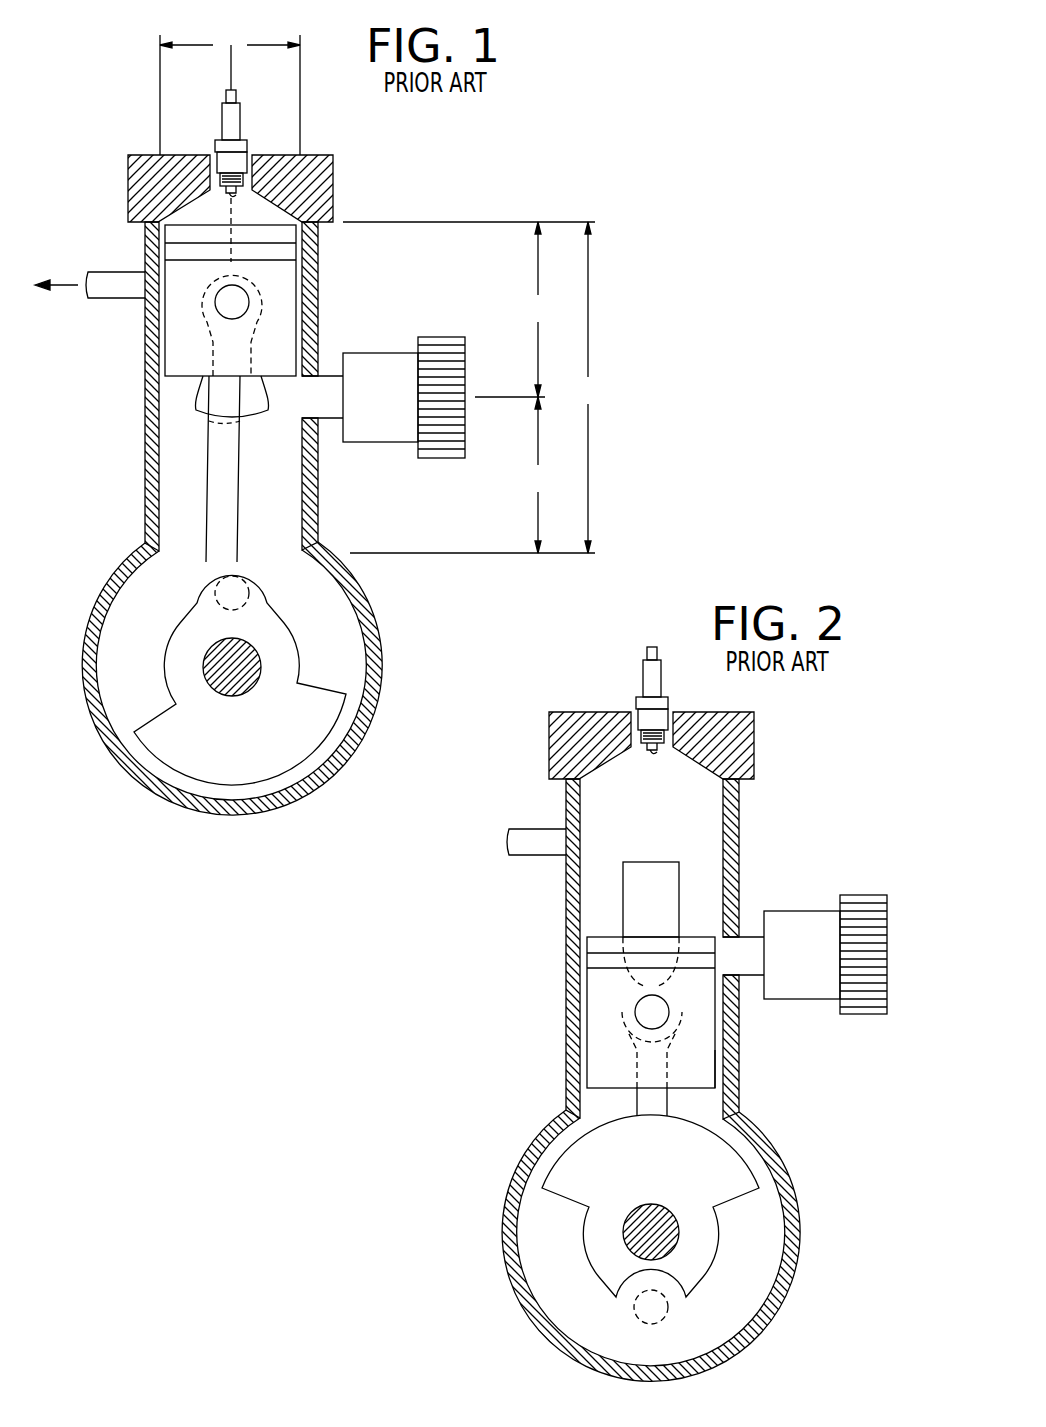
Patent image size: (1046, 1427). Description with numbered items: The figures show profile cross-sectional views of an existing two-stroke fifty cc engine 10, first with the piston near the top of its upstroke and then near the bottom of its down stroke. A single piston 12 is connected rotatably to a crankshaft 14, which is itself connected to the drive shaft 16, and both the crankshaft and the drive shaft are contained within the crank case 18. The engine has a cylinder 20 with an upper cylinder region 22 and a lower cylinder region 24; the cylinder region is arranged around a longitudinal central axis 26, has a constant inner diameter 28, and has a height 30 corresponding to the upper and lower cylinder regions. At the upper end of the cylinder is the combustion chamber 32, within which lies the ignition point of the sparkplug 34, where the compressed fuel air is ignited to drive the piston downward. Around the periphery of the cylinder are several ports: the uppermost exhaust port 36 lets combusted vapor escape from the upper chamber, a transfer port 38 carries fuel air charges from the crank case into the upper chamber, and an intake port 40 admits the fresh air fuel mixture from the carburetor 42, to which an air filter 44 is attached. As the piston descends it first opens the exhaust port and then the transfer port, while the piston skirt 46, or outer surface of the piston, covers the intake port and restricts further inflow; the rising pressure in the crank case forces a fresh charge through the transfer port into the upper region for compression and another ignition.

In FIG. 1, the two-stroke engine 10 is at (121, 135).
In FIG. 2, the two-stroke engine 10 is at (541, 695).
In FIG. 1, the piston 12 is at (175, 340).
In FIG. 2, the piston 12 is at (595, 1043).
In FIG. 1, the crankshaft 14 is at (215, 483).
In FIG. 2, the crankshaft 14 is at (643, 1106).
In FIG. 1, the drive shaft 16 is at (213, 676).
In FIG. 2, the drive shaft 16 is at (630, 1243).
In FIG. 1, the crank case 18 is at (130, 612).
In FIG. 2, the crank case 18 is at (545, 1262).
In FIG. 1, the cylinder 20 is at (150, 376).
In FIG. 2, the cylinder 20 is at (570, 929).
In FIG. 1, the upper cylinder region 22 is at (469, 387).
In FIG. 2, the upper cylinder region 22 is at (600, 820).
In FIG. 1, the lower cylinder region 24 is at (538, 475).
In FIG. 1, the longitudinal central axis 26 is at (233, 76).
In FIG. 1, the inner diameter 28 is at (230, 91).
In FIG. 1, the height 30 is at (588, 387).
In FIG. 1, the combustion chamber 32 is at (190, 205).
In FIG. 2, the combustion chamber 32 is at (612, 765).
In FIG. 1, the sparkplug 34 is at (222, 125).
In FIG. 2, the sparkplug 34 is at (641, 682).
In FIG. 1, the exhaust port 36 is at (118, 273).
In FIG. 2, the exhaust port 36 is at (530, 838).
In FIG. 1, the transfer port 38 is at (205, 405).
In FIG. 2, the transfer port 38 is at (628, 893).
In FIG. 1, the intake port 40 is at (327, 387).
In FIG. 2, the intake port 40 is at (745, 955).
In FIG. 1, the carburetor 42 is at (383, 365).
In FIG. 2, the carburetor 42 is at (800, 925).
In FIG. 1, the air filter 44 is at (442, 343).
In FIG. 2, the air filter 44 is at (862, 905).
In FIG. 2, the piston skirt 46 is at (708, 1072).